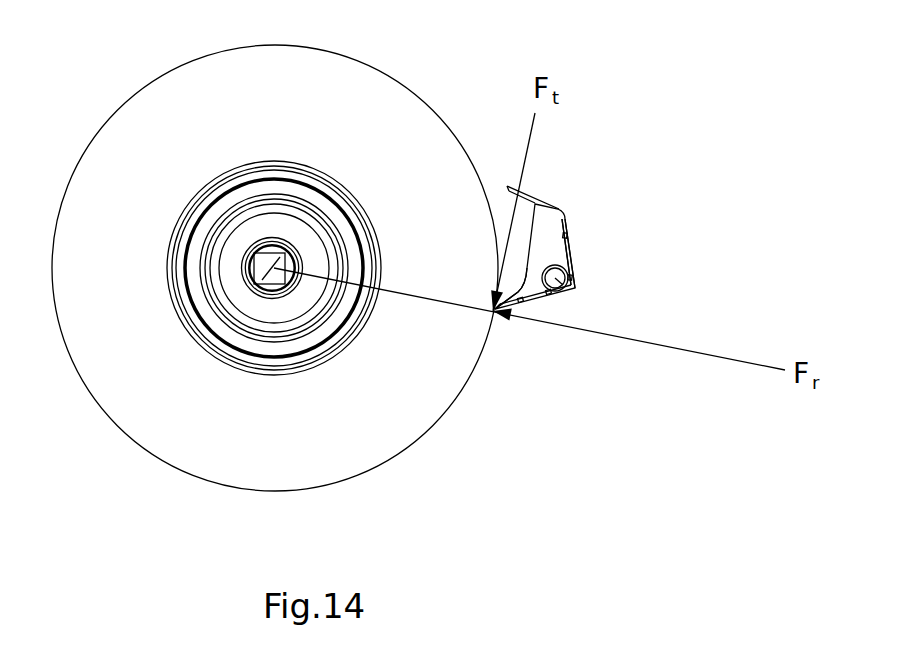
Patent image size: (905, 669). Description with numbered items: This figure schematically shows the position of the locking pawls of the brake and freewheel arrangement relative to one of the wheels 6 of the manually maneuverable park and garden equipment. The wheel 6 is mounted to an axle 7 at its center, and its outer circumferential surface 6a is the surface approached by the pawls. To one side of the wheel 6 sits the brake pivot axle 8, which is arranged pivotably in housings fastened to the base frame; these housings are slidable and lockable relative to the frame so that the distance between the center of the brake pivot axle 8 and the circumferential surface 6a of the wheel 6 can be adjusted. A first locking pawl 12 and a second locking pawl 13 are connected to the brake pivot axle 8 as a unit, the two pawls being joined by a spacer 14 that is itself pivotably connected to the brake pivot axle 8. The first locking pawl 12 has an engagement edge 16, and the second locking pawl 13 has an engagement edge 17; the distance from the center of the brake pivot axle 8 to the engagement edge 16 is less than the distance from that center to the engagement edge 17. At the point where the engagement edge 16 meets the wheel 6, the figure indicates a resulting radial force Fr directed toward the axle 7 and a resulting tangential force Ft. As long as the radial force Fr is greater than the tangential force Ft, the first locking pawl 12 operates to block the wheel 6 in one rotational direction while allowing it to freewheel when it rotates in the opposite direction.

The wheel 6 is at (225, 198).
The circumferential surface of the wheel 6a is at (468, 380).
The axle 7 is at (262, 290).
The brake pivot axle 8 is at (517, 249).
The first locking pawl 12 is at (497, 315).
The second locking pawl 13 is at (535, 204).
The spacer 14 is at (568, 242).
The engagement edge of the first locking pawl 16 is at (493, 313).
The engagement edge of the second locking pawl 17 is at (508, 187).